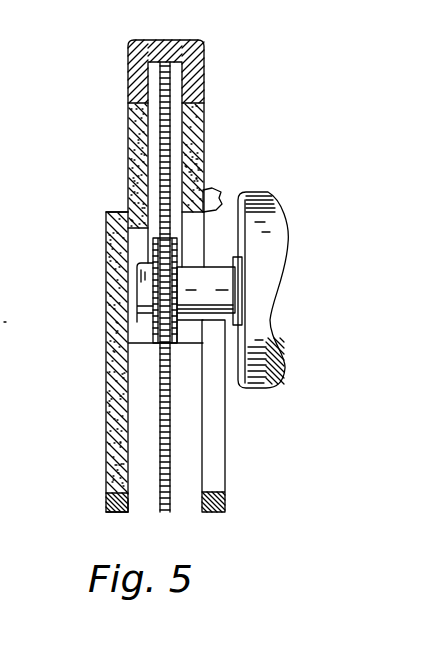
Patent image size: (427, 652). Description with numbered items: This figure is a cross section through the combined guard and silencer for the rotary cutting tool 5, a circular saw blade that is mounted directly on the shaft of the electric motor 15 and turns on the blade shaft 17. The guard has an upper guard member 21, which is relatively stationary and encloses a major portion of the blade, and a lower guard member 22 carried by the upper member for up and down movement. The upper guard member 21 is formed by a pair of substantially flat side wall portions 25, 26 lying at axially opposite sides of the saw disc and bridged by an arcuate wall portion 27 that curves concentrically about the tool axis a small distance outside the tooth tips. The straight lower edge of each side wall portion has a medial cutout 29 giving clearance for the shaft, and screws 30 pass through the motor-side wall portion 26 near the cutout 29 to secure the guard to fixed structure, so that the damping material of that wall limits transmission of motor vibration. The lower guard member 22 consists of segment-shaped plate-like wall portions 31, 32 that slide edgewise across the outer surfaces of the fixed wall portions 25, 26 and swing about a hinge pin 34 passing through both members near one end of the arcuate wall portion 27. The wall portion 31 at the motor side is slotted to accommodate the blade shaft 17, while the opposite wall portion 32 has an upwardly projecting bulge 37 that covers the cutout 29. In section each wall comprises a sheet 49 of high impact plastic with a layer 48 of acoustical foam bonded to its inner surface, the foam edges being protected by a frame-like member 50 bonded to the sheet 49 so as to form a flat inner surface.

The rotary cutting tool 5 is at (160, 411).
The electric motor 15 is at (263, 195).
The blade shaft 17 is at (215, 273).
The upper guard member 21 is at (168, 34).
The lower guard member 22 is at (108, 524).
The side wall portion 25 is at (120, 156).
The side wall portion 26 is at (205, 122).
The arcuate wall portion 27 is at (172, 42).
The medial recess or cutout 29 is at (107, 247).
The screws 30 is at (221, 190).
The wall portion 31 is at (240, 493).
The wall portion 32 is at (99, 486).
The hinge pin 34 is at (6, 326).
The bulge 37 is at (102, 215).
The layer of acoustical foam 48 is at (107, 355).
The sheet of high impact plastic 49 is at (107, 380).
The frame-like member 50 is at (128, 512).